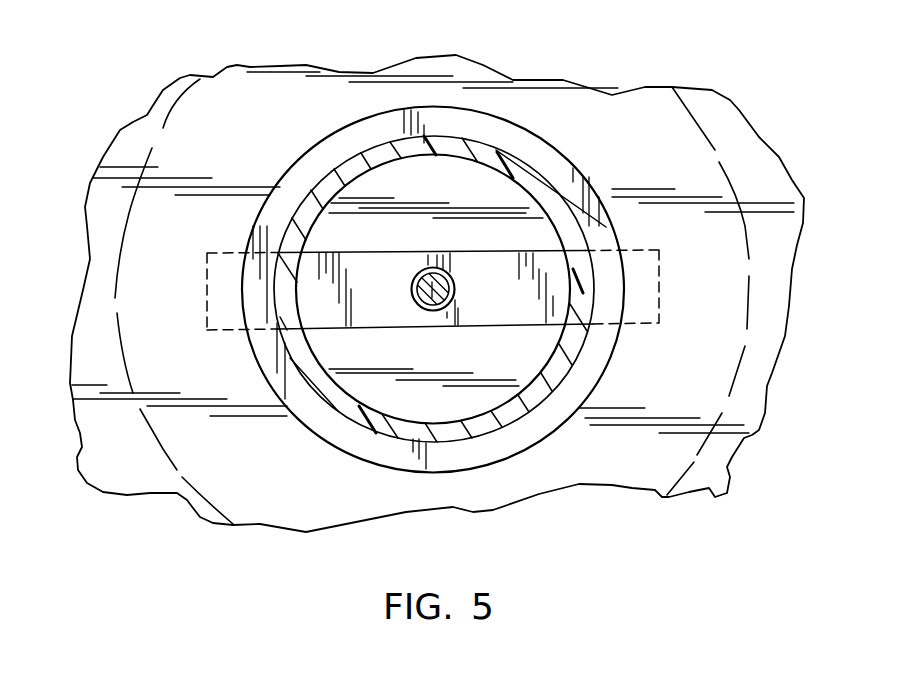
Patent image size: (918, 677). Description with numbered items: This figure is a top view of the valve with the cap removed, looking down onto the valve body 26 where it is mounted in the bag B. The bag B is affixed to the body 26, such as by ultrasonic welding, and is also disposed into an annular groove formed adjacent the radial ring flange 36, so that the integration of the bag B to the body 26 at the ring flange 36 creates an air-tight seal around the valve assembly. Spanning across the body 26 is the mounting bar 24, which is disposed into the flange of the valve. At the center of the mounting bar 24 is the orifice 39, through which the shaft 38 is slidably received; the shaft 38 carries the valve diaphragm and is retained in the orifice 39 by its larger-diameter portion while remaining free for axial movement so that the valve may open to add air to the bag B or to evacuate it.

The bag B is at (122, 123).
The mounting bar 24 is at (506, 273).
The valve body 26 is at (483, 152).
The radial ring flange 36 is at (344, 140).
The shaft 38 is at (419, 304).
The orifice 39 is at (455, 288).